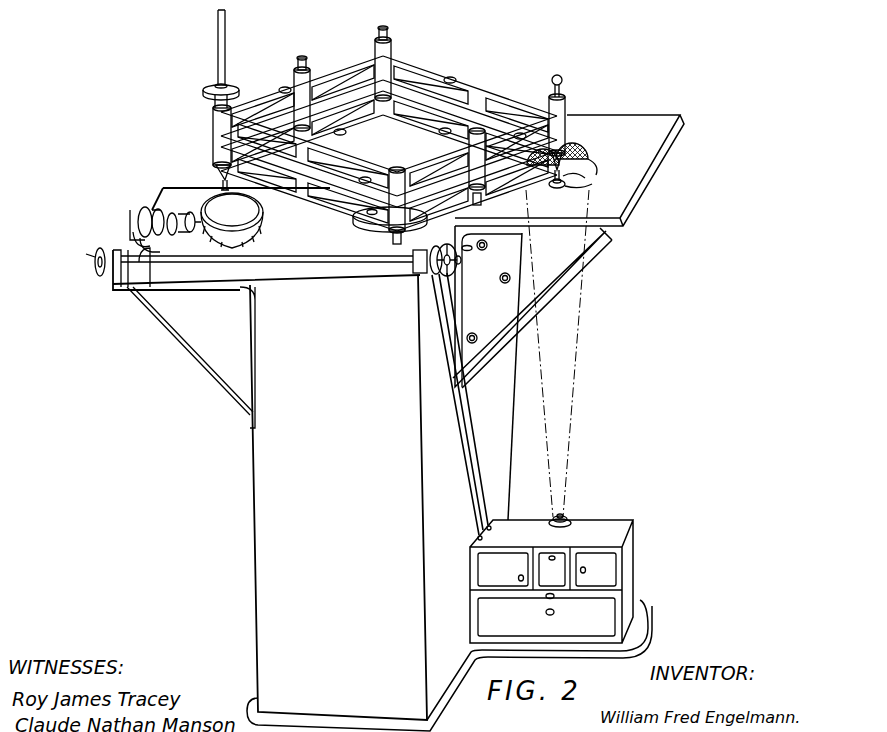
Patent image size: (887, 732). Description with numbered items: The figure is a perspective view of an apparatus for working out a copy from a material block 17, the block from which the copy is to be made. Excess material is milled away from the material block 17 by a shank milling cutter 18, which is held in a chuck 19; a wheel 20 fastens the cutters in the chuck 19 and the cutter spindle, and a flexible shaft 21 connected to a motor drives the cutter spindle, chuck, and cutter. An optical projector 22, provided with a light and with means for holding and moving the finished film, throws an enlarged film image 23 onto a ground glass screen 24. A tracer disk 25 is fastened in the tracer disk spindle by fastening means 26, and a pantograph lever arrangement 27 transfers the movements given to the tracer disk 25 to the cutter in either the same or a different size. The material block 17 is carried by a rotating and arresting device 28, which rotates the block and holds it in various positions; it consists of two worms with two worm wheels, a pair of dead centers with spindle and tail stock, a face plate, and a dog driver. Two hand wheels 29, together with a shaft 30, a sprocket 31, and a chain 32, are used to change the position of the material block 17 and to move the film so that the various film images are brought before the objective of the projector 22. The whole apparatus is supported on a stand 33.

The material block 17 is at (218, 246).
The shank milling cutter 18 is at (212, 188).
The chuck 19 is at (214, 175).
The wheel 20 is at (205, 84).
The flexible shaft 21 is at (215, 40).
The optical projector 22 is at (582, 523).
The enlarged film image 23 is at (594, 147).
The ground glass screen 24 is at (638, 156).
The tracer disk 25 is at (578, 183).
The tracer disk fastening means 26 is at (565, 80).
The pantograph lever arrangement 27 is at (480, 80).
The rotating and arresting device 28 is at (125, 222).
The hand wheels 29 is at (105, 272).
The shaft 30 is at (245, 268).
The sprocket 31 is at (430, 274).
The chain 32 is at (460, 447).
The stand 33 is at (258, 538).